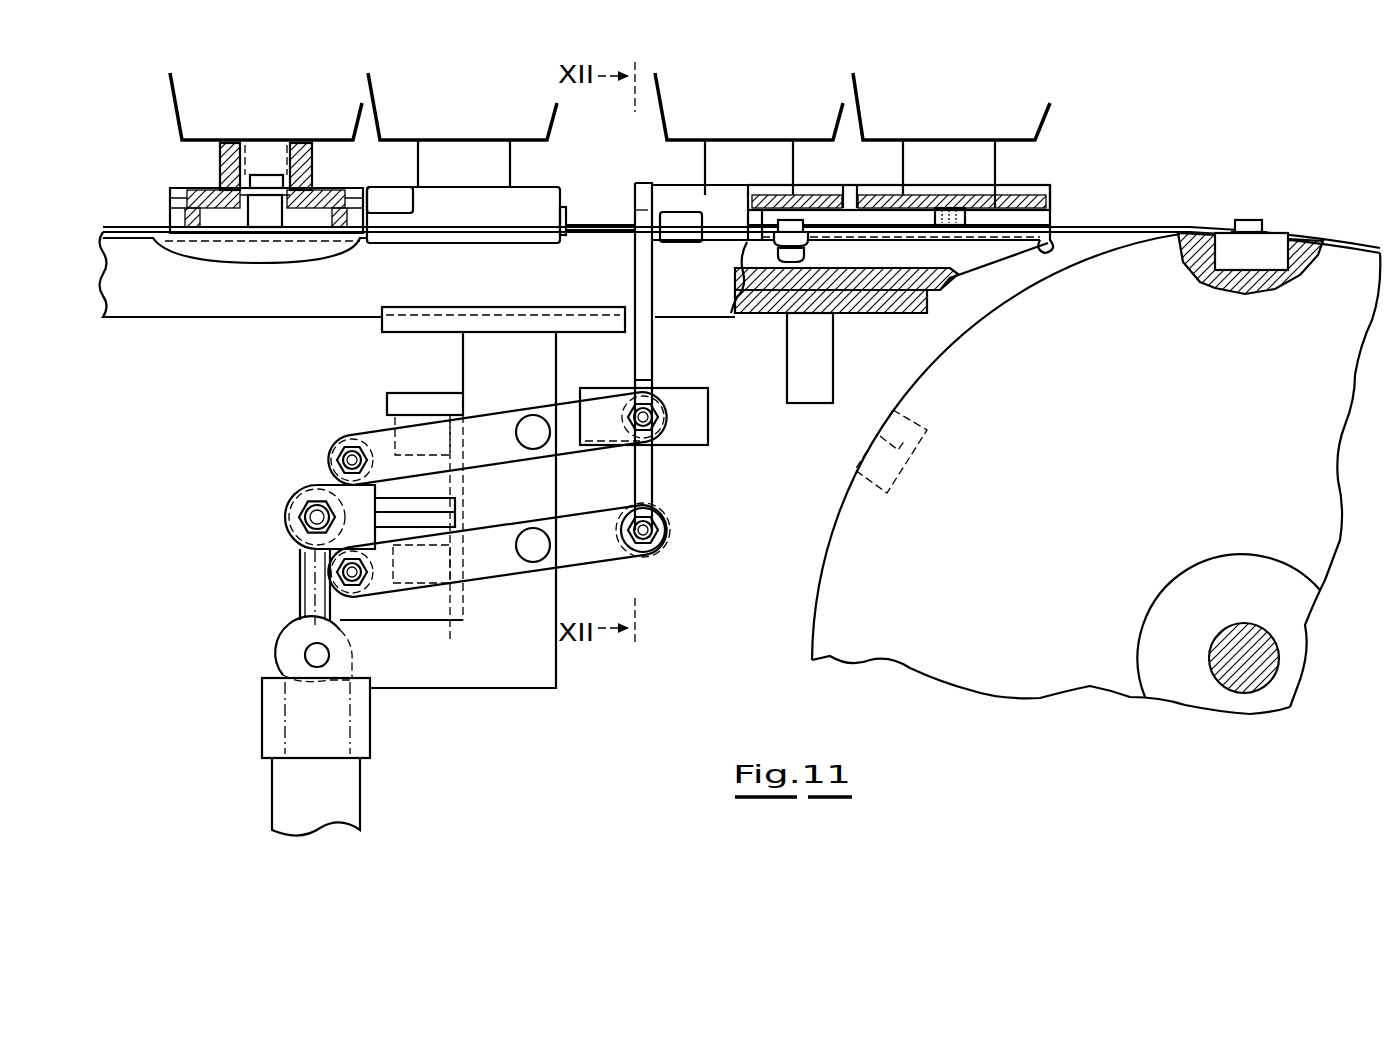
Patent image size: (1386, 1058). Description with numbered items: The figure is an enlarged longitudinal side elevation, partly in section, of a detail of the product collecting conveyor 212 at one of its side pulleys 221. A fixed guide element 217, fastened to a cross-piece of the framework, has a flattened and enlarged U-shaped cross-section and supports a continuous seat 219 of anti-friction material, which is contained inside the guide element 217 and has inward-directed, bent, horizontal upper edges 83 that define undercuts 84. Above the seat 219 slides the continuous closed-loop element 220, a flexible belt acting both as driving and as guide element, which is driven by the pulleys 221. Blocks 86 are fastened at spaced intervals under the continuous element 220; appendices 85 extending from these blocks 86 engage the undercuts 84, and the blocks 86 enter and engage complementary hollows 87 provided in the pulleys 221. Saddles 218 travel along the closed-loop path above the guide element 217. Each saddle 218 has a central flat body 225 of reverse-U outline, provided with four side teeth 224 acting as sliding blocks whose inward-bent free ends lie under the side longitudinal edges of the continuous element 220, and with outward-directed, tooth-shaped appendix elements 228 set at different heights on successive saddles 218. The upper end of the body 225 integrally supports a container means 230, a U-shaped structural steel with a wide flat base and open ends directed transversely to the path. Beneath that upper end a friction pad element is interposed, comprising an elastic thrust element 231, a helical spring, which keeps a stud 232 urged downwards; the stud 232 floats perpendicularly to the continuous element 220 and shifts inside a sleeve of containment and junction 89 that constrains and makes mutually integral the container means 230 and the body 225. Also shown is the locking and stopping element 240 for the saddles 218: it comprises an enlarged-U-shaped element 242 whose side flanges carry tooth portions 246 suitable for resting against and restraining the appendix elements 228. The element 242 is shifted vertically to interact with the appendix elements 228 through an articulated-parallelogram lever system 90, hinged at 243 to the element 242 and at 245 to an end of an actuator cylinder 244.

The product collecting conveyor 212 is at (1228, 156).
The guide element 217 is at (868, 298).
The saddle 218 is at (648, 115).
The continuous seat 219 is at (903, 290).
The continuous closed-loop element 220 is at (1130, 229).
The pulley 221 is at (830, 630).
The side appendices or teeth 224 is at (522, 226).
The central flat body 225 is at (1022, 196).
The appendix elements 228 is at (396, 204).
The container means 230 is at (757, 138).
The elastic thrust element 231 is at (282, 140).
The stud 232 is at (268, 218).
The locking and stopping element 240 is at (658, 473).
The enlarged-U-shaped element 242 is at (651, 360).
The hinge 243 is at (632, 512).
The actuator cylinder 244 is at (344, 797).
The hinge 245 is at (308, 512).
The tooth portions 246 is at (638, 195).
The upper edges 83 is at (975, 236).
The undercuts 84 is at (1050, 250).
The appendices 85 is at (805, 242).
The blocks 86 is at (797, 234).
The hollows 87 is at (1233, 265).
The sleeve of containment and junction 89 is at (719, 165).
The articulated-parallelogram lever system 90 is at (507, 452).